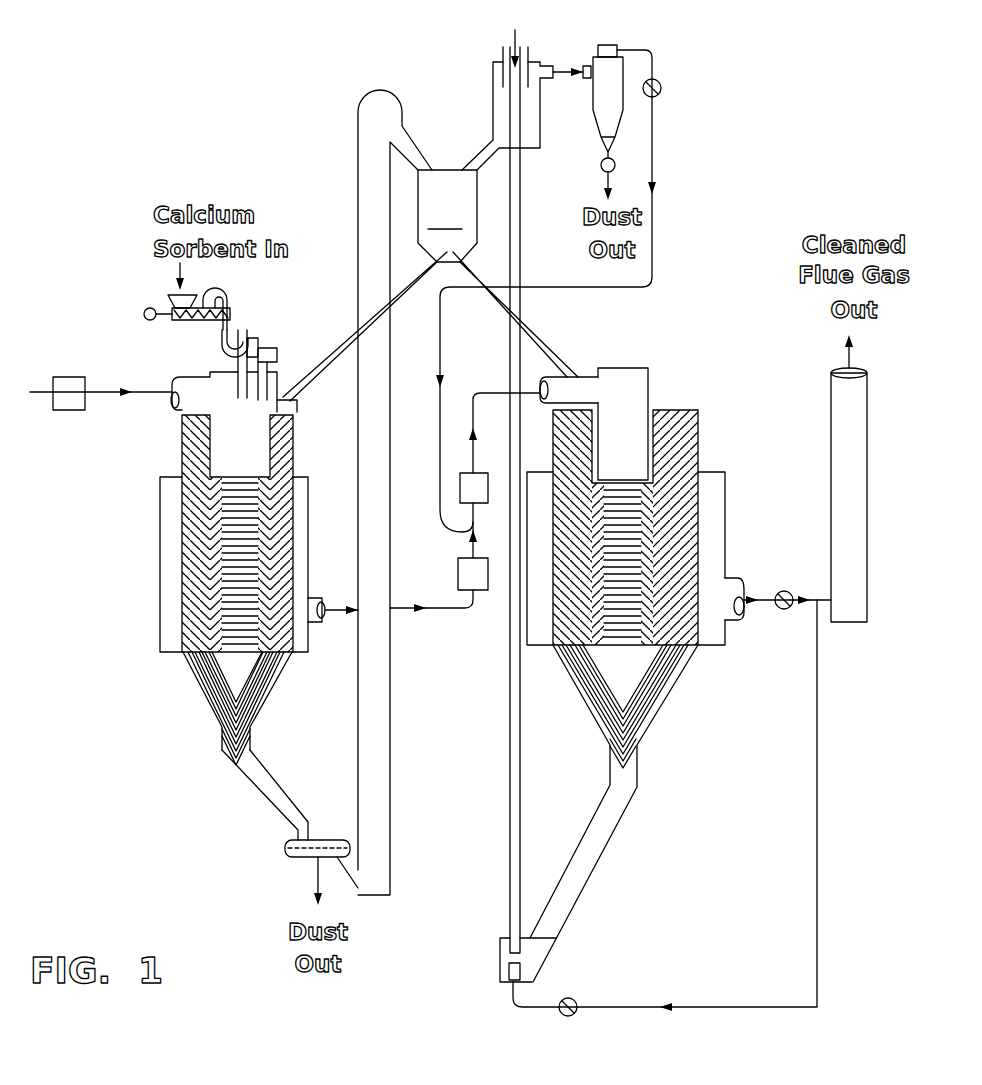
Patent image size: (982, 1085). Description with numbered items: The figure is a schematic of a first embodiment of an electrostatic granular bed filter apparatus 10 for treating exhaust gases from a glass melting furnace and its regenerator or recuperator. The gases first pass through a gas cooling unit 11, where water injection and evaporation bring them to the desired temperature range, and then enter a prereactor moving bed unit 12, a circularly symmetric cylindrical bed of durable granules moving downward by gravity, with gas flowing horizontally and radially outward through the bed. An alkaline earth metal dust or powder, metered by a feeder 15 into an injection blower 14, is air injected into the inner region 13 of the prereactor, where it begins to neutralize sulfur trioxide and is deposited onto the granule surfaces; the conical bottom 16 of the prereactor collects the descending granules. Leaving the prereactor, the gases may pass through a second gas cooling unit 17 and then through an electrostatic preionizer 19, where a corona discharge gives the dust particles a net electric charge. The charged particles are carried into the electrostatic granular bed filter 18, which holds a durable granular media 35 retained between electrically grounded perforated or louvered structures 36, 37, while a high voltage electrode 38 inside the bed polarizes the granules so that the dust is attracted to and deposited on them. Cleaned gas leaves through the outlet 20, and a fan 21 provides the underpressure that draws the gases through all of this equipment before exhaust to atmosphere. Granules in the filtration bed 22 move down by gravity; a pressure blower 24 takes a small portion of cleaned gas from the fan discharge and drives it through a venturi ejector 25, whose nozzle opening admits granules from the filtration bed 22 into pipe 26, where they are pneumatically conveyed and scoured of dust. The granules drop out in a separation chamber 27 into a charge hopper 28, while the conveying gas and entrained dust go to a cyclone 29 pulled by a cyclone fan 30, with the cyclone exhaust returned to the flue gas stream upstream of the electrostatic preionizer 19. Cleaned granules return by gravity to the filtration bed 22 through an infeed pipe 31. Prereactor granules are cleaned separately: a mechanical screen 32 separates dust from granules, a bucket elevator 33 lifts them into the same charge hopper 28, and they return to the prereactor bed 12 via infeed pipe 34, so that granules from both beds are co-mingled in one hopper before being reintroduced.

The electrostatic granular bed filter apparatus 10 is at (726, 210).
The gas cooling unit 11 is at (66, 392).
The prereactor moving bed unit 12 is at (205, 582).
The inner region 13 is at (260, 405).
The injection blower 14 is at (240, 348).
The feeder 15 is at (190, 296).
The conical bottom hopper 16 is at (235, 625).
The second gas cooling unit 17 is at (458, 575).
The electrostatic granular bed filter 18 is at (652, 372).
The electrostatic preionizer 19 is at (460, 480).
The outlet 20 is at (745, 583).
The fan 21 is at (786, 611).
The filtration bed 22 is at (640, 498).
The pressure blower 24 is at (574, 1000).
The venturi ejector 25 is at (545, 968).
The pipe 26 is at (508, 862).
The separation chamber 27 is at (530, 60).
The charge hopper 28 is at (447, 216).
The cyclone 29 is at (598, 122).
The cyclone fan 30 is at (661, 83).
The infeed pipe 31 is at (546, 345).
The mechanical screen 32 is at (285, 848).
The bucket elevator 33 is at (392, 376).
The infeed pipe 34 is at (289, 400).
The durable granular media 35 is at (690, 545).
The louvered structure 36 is at (663, 615).
The louvered structure 37 is at (688, 478).
The high voltage electrode 38 is at (678, 482).